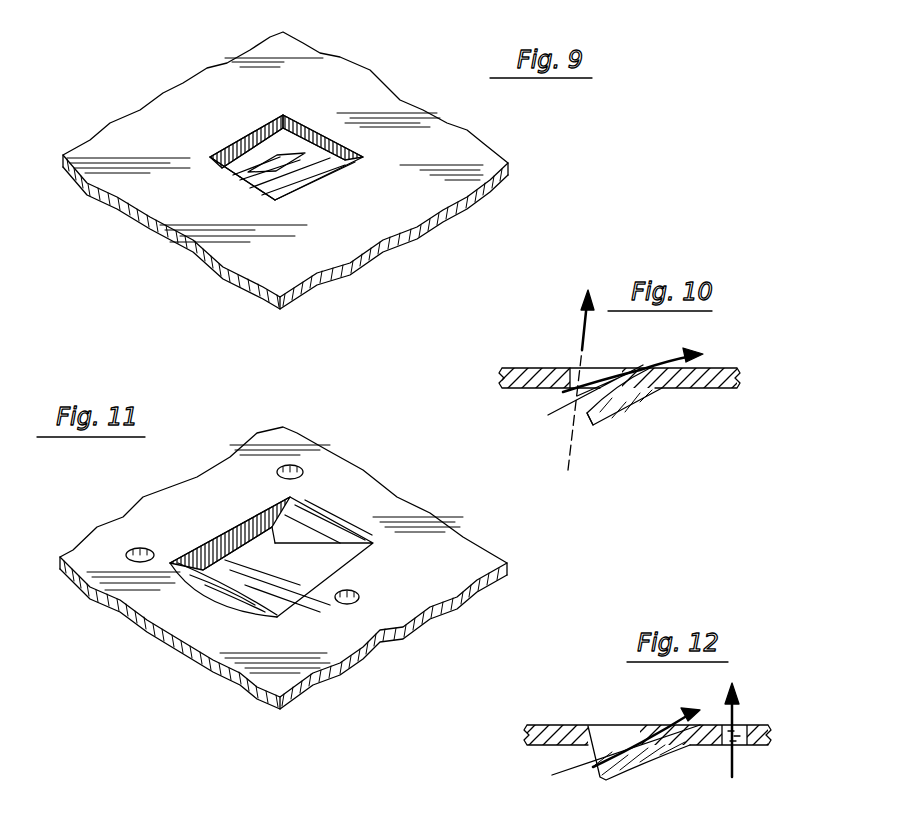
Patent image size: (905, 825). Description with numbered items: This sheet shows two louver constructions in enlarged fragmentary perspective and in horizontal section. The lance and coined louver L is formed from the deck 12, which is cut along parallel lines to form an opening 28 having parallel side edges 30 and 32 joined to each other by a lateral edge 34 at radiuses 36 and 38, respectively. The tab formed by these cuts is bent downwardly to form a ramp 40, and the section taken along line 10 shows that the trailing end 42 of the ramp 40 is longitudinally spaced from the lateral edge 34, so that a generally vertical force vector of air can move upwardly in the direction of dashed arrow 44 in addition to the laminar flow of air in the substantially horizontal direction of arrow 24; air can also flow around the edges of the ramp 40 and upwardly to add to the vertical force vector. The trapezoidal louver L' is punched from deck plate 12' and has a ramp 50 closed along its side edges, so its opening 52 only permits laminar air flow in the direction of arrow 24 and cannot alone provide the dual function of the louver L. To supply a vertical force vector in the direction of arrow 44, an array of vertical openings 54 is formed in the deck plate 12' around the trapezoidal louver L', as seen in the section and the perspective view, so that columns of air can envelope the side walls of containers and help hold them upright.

In FIG. 9, the section line 10 is at (227, 82).
In FIG. 9, the deck 12 is at (285, 170).
In FIG. 10, the deck 12 is at (648, 366).
In FIG. 11, the deck 12 is at (280, 559).
In FIG. 11, the deck plate 12' is at (283, 568).
In FIG. 10, the arrow 24 is at (685, 345).
In FIG. 12, the arrow 24 is at (668, 712).
In FIG. 9, the opening 28 is at (237, 167).
In FIG. 10, the opening 28 is at (548, 412).
In FIG. 9, the side edge 30 is at (313, 133).
In FIG. 10, the side edge 30 is at (597, 380).
In FIG. 9, the side edge 32 is at (260, 183).
In FIG. 9, the lateral edge 34 is at (257, 125).
In FIG. 10, the lateral edge 34 is at (570, 368).
In FIG. 9, the radius 36 is at (281, 117).
In FIG. 9, the radius 38 is at (210, 170).
In FIG. 9, the ramp 40 is at (320, 138).
In FIG. 10, the ramp 40 is at (623, 415).
In FIG. 10, the trailing end 42 is at (590, 433).
In FIG. 10, the arrow 44 is at (585, 327).
In FIG. 12, the arrow 44 is at (737, 712).
In FIG. 11, the ramp 50 is at (277, 612).
In FIG. 12, the ramp 50 is at (623, 760).
In FIG. 11, the opening 52 is at (262, 545).
In FIG. 12, the opening 52 is at (590, 757).
In FIG. 11, the vertical opening 54 is at (293, 466).
In FIG. 12, the vertical opening 54 is at (740, 748).
In FIG. 9, the louver L is at (368, 61).
In FIG. 10, the louver L is at (498, 310).
In FIG. 11, the trapezoidal louver L' is at (372, 463).
In FIG. 12, the trapezoidal louver L' is at (514, 760).